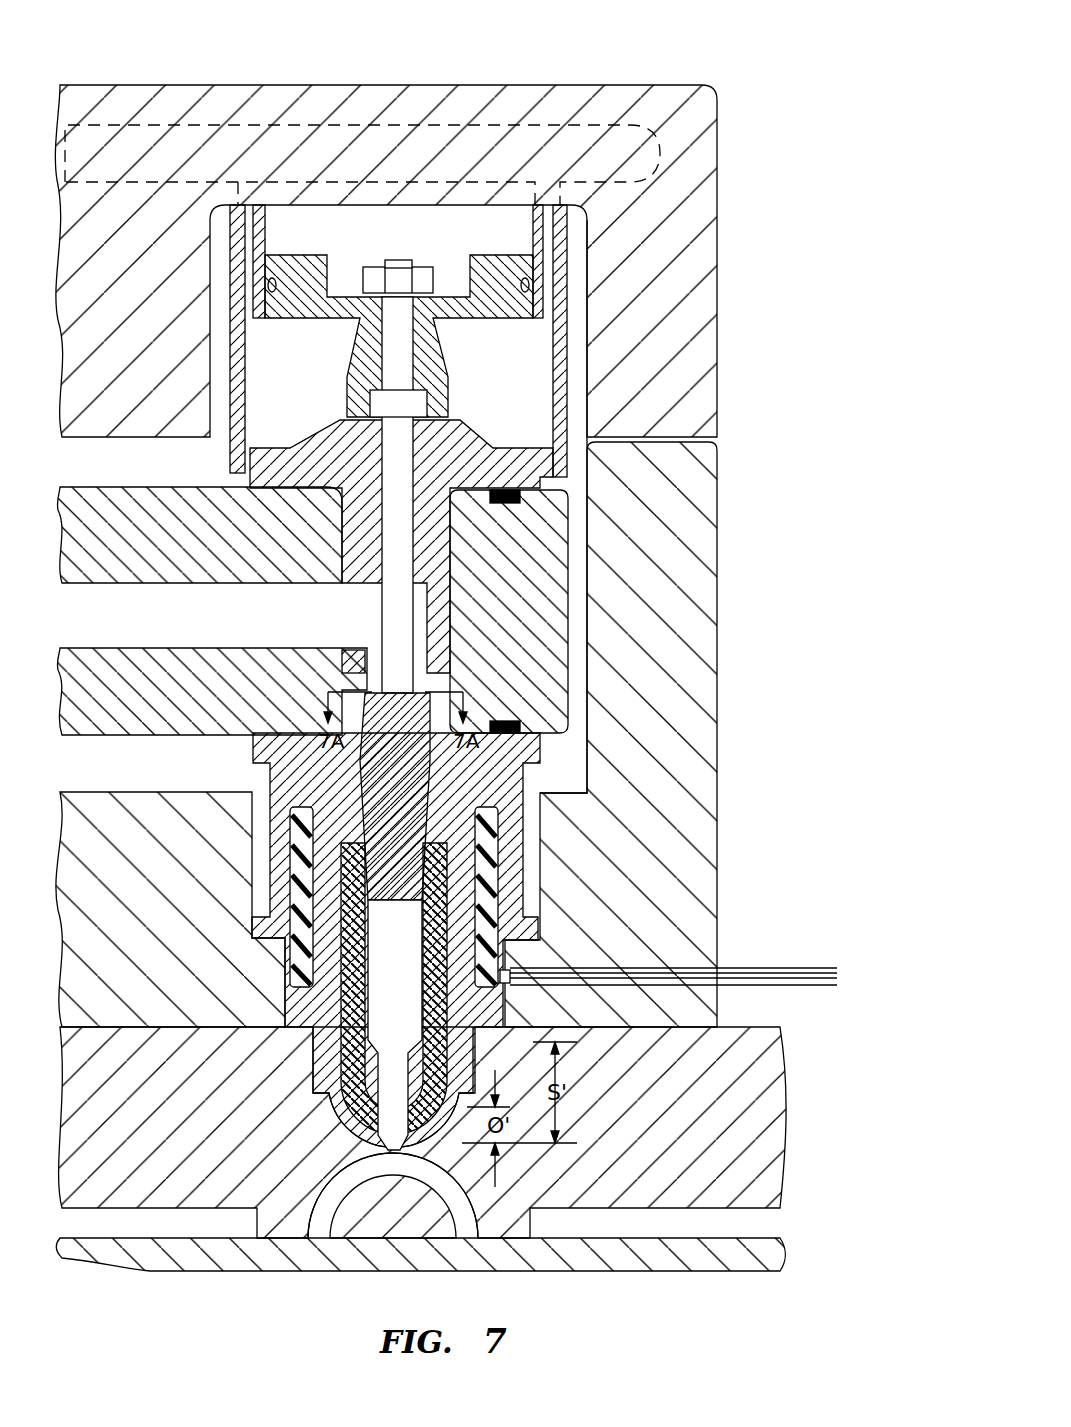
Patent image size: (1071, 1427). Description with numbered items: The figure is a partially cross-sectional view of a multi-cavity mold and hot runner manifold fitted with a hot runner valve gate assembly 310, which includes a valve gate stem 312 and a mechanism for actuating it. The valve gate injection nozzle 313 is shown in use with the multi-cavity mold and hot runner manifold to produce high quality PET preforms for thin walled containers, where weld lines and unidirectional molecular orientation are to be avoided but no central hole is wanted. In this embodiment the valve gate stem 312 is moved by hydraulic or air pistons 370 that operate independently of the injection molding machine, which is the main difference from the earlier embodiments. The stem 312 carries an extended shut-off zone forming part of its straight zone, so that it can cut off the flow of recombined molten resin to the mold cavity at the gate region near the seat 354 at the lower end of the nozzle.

The valve assembly 310 is at (500, 60).
The hydraulic or air piston 370 is at (493, 222).
The valve gate injection nozzle 313 is at (530, 402).
The valve gate stem 312 is at (387, 782).
The valve seat 354 is at (337, 1190).